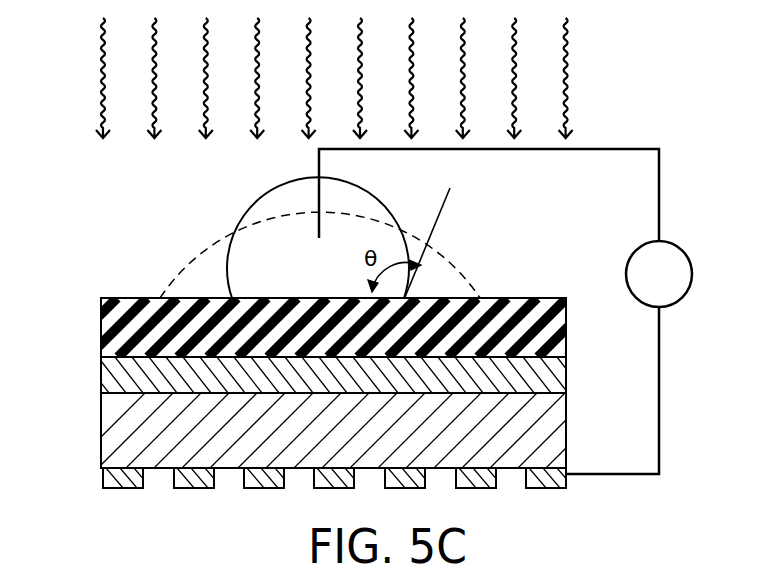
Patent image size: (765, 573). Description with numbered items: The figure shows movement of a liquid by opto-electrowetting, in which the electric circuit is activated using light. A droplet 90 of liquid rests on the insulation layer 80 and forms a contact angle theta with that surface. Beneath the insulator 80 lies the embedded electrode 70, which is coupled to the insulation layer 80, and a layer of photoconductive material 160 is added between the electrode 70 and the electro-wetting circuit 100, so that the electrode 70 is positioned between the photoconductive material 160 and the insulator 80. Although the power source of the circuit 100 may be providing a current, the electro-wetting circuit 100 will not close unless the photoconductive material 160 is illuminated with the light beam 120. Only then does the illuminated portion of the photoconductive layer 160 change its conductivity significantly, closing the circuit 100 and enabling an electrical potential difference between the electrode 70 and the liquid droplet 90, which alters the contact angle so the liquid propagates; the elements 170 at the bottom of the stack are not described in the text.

The light beam 120 is at (591, 73).
The electro-wetting circuit 100 is at (676, 187).
The liquid droplet 90 is at (265, 190).
The insulation layer 80 is at (101, 327).
The embedded electrode 70 is at (101, 383).
The photoconductive material layer 160 is at (101, 435).
The electrodes 170 is at (197, 488).